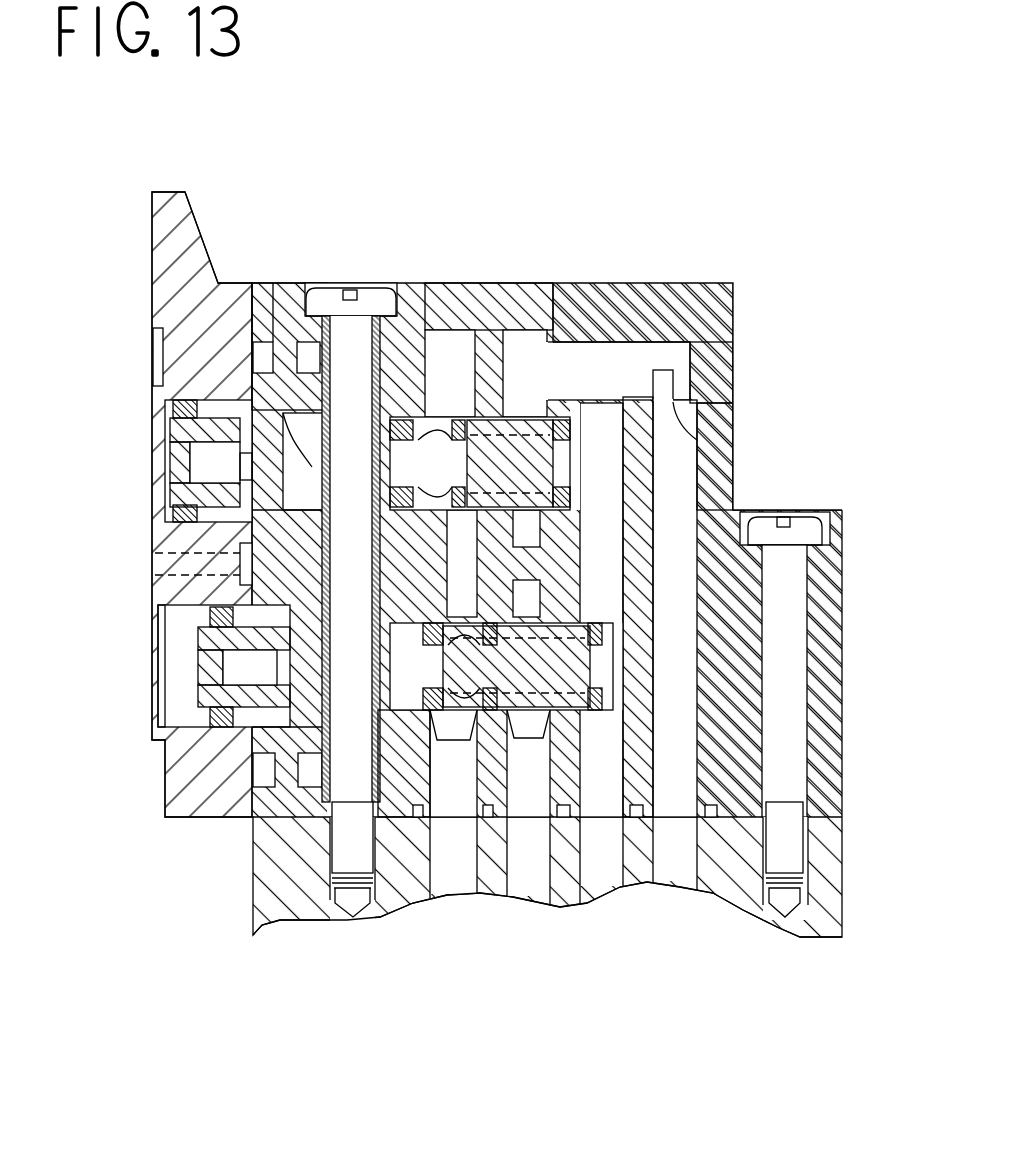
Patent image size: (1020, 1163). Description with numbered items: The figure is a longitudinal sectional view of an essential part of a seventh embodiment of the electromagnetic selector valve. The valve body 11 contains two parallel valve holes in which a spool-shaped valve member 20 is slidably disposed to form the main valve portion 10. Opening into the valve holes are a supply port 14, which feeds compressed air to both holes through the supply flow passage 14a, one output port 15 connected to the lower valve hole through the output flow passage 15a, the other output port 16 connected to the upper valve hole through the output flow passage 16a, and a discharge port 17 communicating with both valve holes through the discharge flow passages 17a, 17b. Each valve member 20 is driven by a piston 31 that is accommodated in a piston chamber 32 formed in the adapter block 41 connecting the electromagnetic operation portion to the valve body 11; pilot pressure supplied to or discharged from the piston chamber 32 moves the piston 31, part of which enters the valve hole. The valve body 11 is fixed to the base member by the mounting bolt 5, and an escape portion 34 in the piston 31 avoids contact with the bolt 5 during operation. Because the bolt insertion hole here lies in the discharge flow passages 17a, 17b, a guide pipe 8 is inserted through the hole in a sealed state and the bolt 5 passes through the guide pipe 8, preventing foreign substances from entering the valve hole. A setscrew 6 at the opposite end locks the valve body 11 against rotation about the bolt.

The main valve portion 10 is at (578, 260).
The adapter block 41 is at (186, 227).
The piston 31 is at (193, 493).
The piston chamber 32 is at (300, 370).
The escape portion 34 is at (312, 465).
The mounting bolt 5 is at (357, 353).
The setscrew 6 is at (787, 605).
The guide pipe 8 is at (320, 728).
The valve body 11 is at (710, 422).
The supply port 14 is at (600, 770).
The supply flow passage 14a is at (697, 473).
The output port 15 is at (530, 720).
The output flow passage 15a is at (600, 770).
The output port 16 is at (677, 777).
The output flow passage 16a is at (618, 367).
The discharge port 17 is at (463, 720).
The discharge flow passage 17a is at (440, 720).
The discharge flow passage 17b is at (402, 690).
The valve member 20 is at (521, 410).